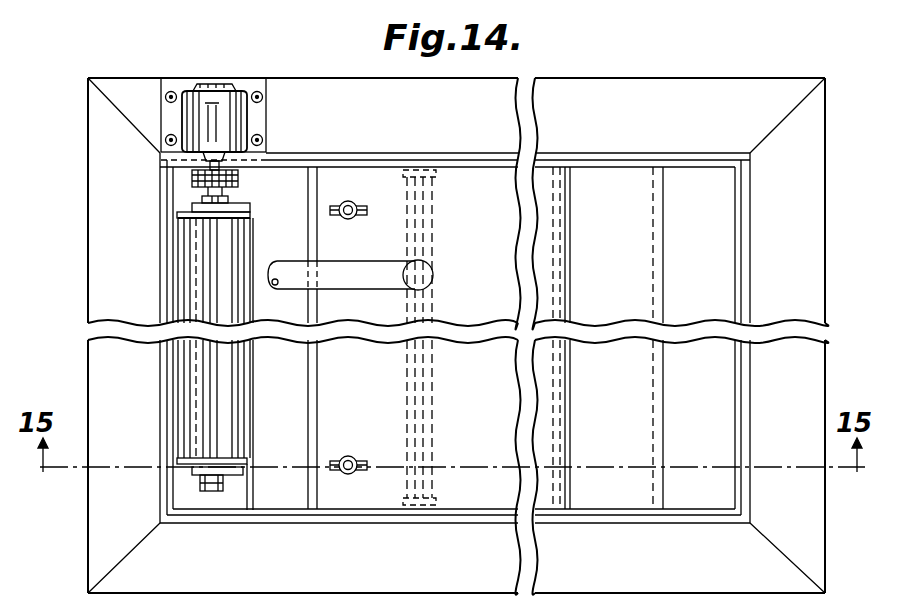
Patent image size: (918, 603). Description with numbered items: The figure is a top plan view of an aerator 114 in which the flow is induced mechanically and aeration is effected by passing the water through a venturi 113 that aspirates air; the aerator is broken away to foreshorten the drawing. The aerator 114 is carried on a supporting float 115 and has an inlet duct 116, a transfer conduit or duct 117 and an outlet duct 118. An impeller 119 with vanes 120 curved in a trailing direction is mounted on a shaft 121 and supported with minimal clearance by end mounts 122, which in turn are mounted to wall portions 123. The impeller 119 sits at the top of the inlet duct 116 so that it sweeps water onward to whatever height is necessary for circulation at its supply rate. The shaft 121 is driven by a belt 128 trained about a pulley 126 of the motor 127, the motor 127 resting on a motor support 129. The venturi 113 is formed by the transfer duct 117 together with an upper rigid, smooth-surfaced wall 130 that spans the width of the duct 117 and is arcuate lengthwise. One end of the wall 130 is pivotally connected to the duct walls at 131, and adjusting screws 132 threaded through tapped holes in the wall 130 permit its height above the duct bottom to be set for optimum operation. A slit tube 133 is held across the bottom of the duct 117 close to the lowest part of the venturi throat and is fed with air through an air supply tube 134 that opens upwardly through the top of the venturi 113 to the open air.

The venturi 113 is at (617, 194).
The aerator 114 is at (344, 64).
The supporting float 115 is at (836, 186).
The inlet duct 116 is at (223, 500).
The transfer conduit or duct 117 is at (640, 497).
The outlet duct 118 is at (717, 407).
The impeller 119 is at (158, 301).
The vanes 120 is at (232, 268).
The shaft 121 is at (210, 487).
The end mounts 122 is at (238, 484).
The wall portions 123 is at (243, 510).
The pulley of the motor 126 is at (198, 193).
The motor 127 is at (194, 82).
The belt 128 is at (192, 176).
The motor support 129 is at (267, 119).
The upper wall 130 is at (473, 497).
The pivotal connection 131 is at (558, 158).
The adjusting screws 132 is at (367, 193).
The slit tube 133 is at (423, 398).
The air supply tube 134 is at (367, 270).